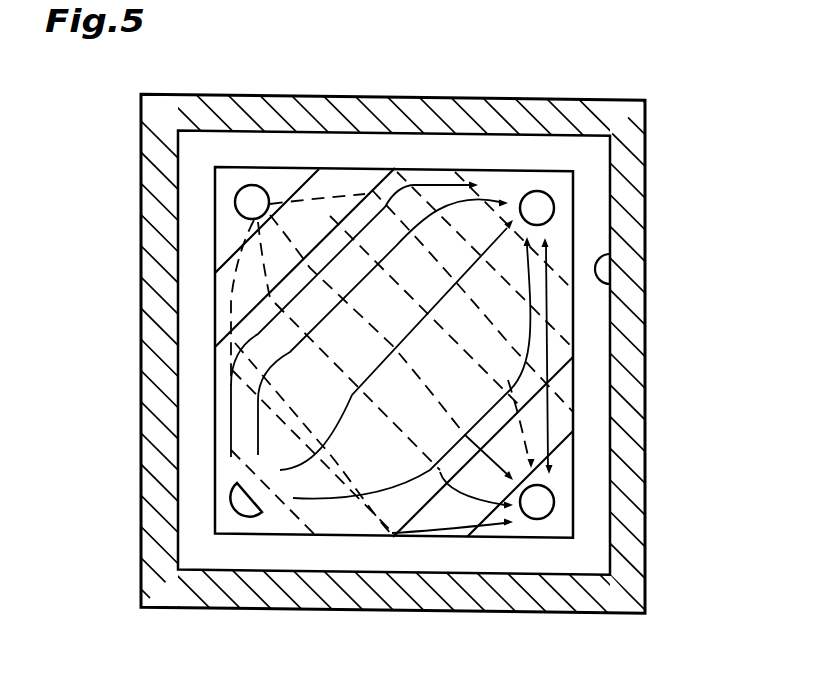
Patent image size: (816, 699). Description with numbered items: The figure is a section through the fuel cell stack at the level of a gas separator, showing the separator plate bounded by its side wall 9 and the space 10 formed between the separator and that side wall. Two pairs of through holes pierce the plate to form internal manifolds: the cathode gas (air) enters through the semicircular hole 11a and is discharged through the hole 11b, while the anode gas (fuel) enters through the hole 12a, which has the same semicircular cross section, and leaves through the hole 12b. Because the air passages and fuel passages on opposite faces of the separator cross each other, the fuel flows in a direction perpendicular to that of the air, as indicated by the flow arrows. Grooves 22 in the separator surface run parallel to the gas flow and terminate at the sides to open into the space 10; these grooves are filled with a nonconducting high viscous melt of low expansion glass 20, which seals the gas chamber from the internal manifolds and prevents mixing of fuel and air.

The side wall 9 is at (640, 309).
The space 10 is at (598, 274).
The through hole (cathode gas inlet manifold) 11a is at (234, 488).
The through hole (cathode gas outlet manifold) 11b is at (551, 197).
The through hole (anode gas inlet manifold) 12a is at (255, 185).
The through hole (anode gas outlet manifold) 12b is at (537, 521).
The sealing material (high viscous melt of low expansion glass) 20 is at (192, 402).
The grooves 22 is at (571, 458).